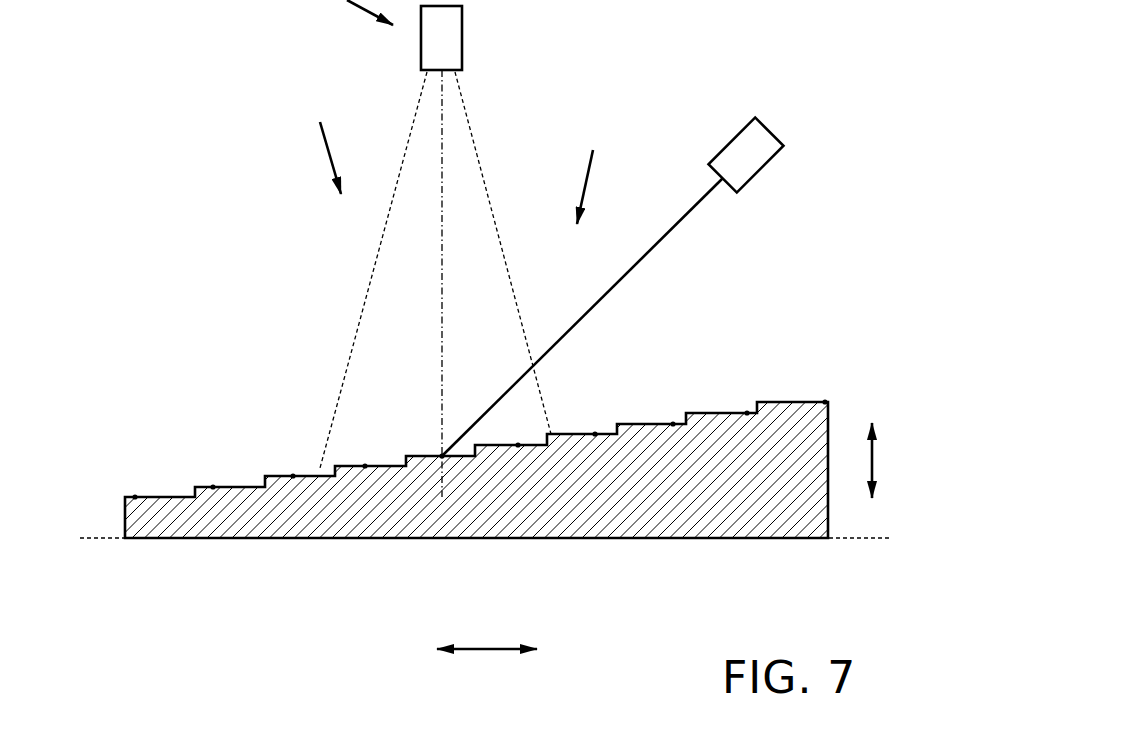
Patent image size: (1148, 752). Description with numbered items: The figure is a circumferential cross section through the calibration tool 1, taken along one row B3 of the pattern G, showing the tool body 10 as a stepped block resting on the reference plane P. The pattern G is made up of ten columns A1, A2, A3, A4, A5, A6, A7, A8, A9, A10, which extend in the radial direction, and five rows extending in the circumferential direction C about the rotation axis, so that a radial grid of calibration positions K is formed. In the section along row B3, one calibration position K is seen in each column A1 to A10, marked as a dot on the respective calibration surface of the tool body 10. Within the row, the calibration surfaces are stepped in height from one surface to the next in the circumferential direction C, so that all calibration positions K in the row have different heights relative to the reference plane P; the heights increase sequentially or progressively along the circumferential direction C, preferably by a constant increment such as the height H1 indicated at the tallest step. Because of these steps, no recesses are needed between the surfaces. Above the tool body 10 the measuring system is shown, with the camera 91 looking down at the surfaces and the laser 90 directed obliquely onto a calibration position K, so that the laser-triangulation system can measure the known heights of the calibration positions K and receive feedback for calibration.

The calibration tool 1 is at (274, 264).
The tool body 10 is at (340, 542).
The laser 90 is at (738, 152).
The camera 91 is at (457, 43).
The calibration positions K is at (293, 476).
The reference plane P is at (93, 540).
The pattern G is at (326, 143).
The row B3 is at (587, 170).
The height H1 is at (895, 460).
The circumferential direction C is at (487, 671).
The column A1 is at (155, 586).
The column A2 is at (232, 586).
The column A3 is at (297, 586).
The column A4 is at (381, 586).
The column A5 is at (447, 586).
The column A6 is at (512, 586).
The column A7 is at (579, 586).
The column A8 is at (646, 586).
The column A9 is at (712, 586).
The column A10 is at (785, 586).